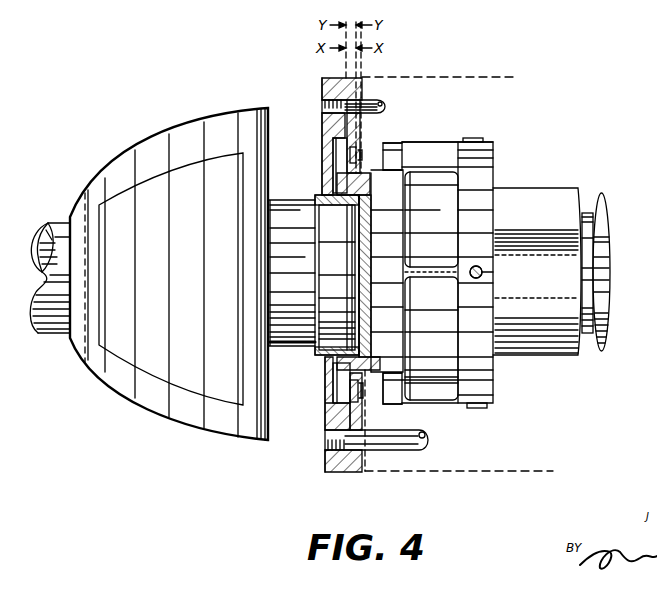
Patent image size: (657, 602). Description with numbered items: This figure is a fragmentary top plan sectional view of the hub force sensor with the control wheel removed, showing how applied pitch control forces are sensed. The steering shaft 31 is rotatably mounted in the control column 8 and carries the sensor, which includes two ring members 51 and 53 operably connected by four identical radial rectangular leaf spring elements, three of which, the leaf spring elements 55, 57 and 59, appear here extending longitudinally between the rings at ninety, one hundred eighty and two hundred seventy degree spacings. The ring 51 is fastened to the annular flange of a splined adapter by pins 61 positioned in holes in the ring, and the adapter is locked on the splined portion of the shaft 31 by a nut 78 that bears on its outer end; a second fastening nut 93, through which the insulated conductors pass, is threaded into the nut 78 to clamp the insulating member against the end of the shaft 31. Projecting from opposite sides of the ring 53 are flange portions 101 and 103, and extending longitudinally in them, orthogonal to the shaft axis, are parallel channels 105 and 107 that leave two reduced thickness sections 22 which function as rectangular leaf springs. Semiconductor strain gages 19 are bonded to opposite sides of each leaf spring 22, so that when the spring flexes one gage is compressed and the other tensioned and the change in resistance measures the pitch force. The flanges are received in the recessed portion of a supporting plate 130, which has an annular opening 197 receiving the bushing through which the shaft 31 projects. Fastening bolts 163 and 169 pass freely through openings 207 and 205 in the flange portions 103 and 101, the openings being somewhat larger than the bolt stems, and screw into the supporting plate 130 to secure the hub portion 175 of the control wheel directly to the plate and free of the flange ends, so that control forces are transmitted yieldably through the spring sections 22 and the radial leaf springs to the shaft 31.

The control column 8 is at (144, 138).
The steering shaft 31 is at (57, 228).
The supporting plate 130 is at (322, 78).
The flange portion 103 is at (366, 80).
The hub portion 175 is at (452, 50).
The opening 207 is at (372, 100).
The fastening bolt 163 is at (388, 107).
The channel 107 is at (333, 140).
The semiconductor strain gage 19 is at (360, 156).
The pitch axis control force sensing rectangular leaf spring 22 is at (363, 150).
The ring member 53 is at (400, 146).
The radial rectangular leaf spring element 59 is at (455, 142).
The pin 61 is at (486, 272).
The ring member 51 is at (493, 158).
The nut 78 is at (562, 180).
The second fastening nut 93 is at (610, 215).
The radial rectangular leaf spring element 57 is at (452, 272).
The annular opening 197 is at (323, 196).
The channel 105 is at (333, 405).
The flange portion 101 is at (359, 473).
The opening 205 is at (365, 446).
The fastening bolt 169 is at (428, 440).
The radial rectangular leaf spring element 55 is at (432, 404).